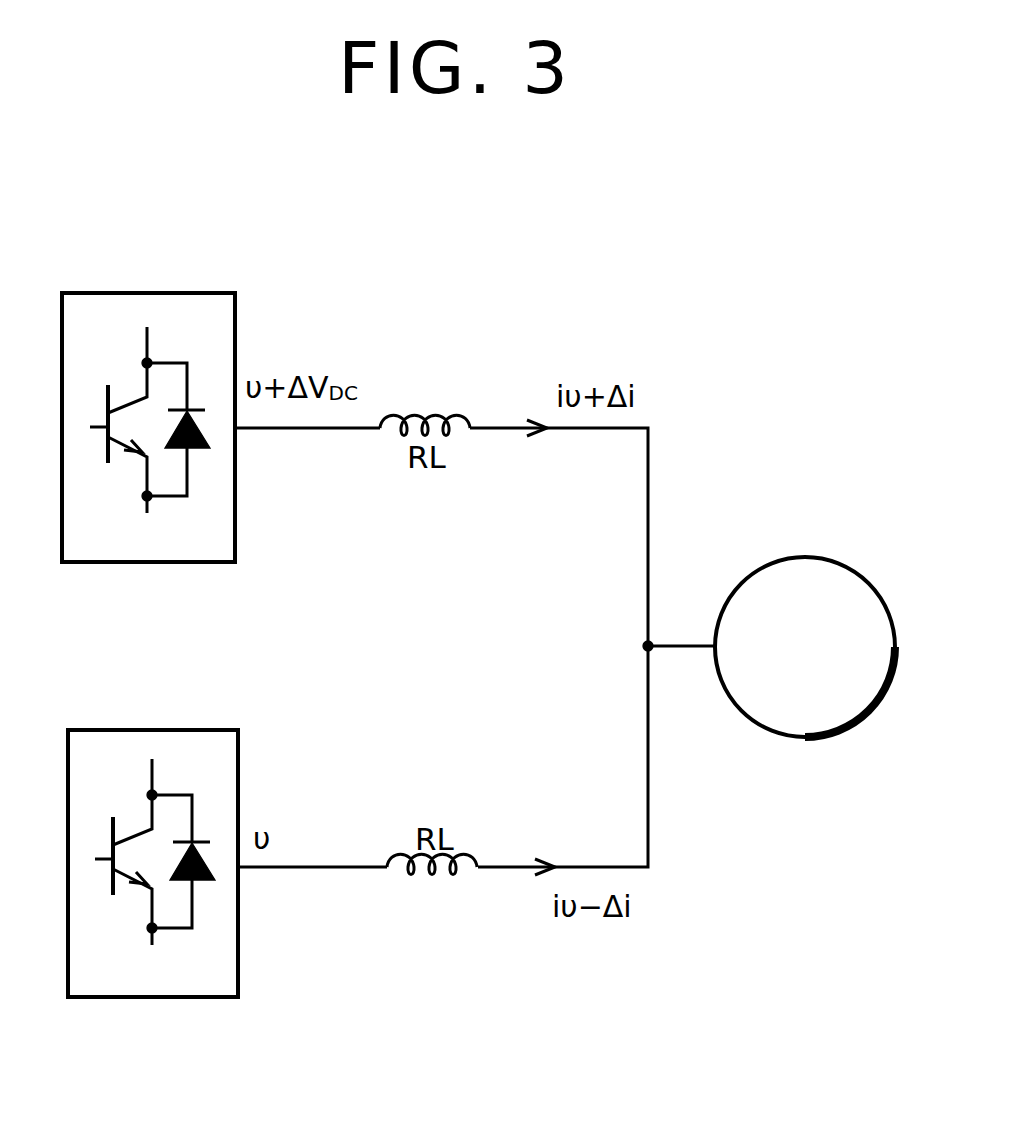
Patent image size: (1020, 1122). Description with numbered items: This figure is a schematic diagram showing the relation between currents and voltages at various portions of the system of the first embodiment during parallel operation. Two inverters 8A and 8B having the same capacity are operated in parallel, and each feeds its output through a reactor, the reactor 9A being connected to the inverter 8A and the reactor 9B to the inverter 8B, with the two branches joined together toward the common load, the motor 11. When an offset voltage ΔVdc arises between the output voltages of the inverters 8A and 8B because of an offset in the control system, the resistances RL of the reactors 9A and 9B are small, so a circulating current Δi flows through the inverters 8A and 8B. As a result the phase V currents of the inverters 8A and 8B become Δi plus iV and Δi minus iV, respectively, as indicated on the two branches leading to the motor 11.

The inverter 8A is at (202, 292).
The inverter 8B is at (205, 997).
The reactor 9A is at (457, 418).
The reactor 9B is at (443, 877).
The induction motor 11 is at (820, 556).